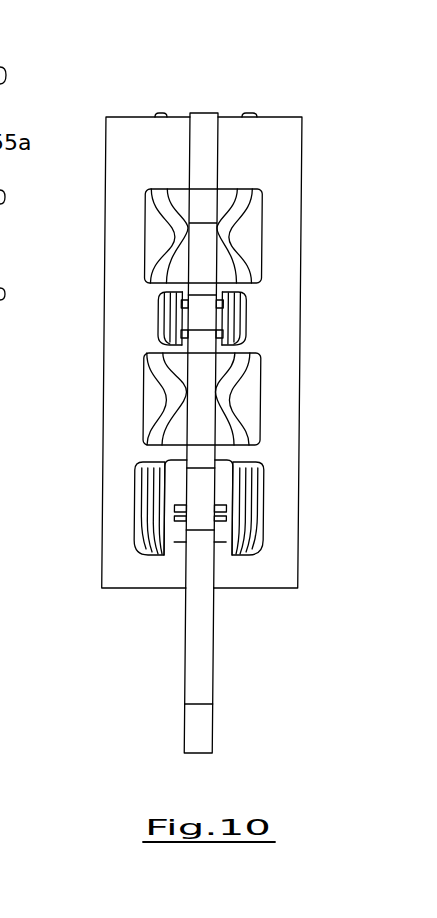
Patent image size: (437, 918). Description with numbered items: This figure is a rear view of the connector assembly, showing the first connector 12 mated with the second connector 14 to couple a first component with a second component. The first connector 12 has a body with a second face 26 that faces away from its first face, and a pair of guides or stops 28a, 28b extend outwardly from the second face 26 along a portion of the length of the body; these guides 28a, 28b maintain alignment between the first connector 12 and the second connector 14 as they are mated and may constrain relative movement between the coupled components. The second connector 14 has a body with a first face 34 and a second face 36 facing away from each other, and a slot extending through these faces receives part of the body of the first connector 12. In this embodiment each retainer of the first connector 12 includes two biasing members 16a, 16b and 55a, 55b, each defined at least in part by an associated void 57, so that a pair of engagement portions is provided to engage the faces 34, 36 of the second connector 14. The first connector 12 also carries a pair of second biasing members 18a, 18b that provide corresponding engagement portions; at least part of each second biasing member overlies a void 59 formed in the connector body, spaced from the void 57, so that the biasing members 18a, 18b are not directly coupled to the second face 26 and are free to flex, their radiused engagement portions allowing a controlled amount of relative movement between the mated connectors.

The first connector 12 is at (302, 173).
The second connector 14 is at (207, 637).
The biasing member 16a is at (233, 208).
The biasing member 16b is at (253, 408).
The biasing member 18a is at (218, 308).
The biasing member 18b is at (217, 500).
The second face 26 is at (270, 130).
The guide 28a is at (162, 302).
The guide 28b is at (240, 320).
The first face 34 is at (213, 677).
The second face 36 is at (185, 680).
The biasing member 55a is at (180, 203).
The biasing member 55b is at (153, 392).
The void 57 is at (250, 232).
The void 59 is at (172, 543).